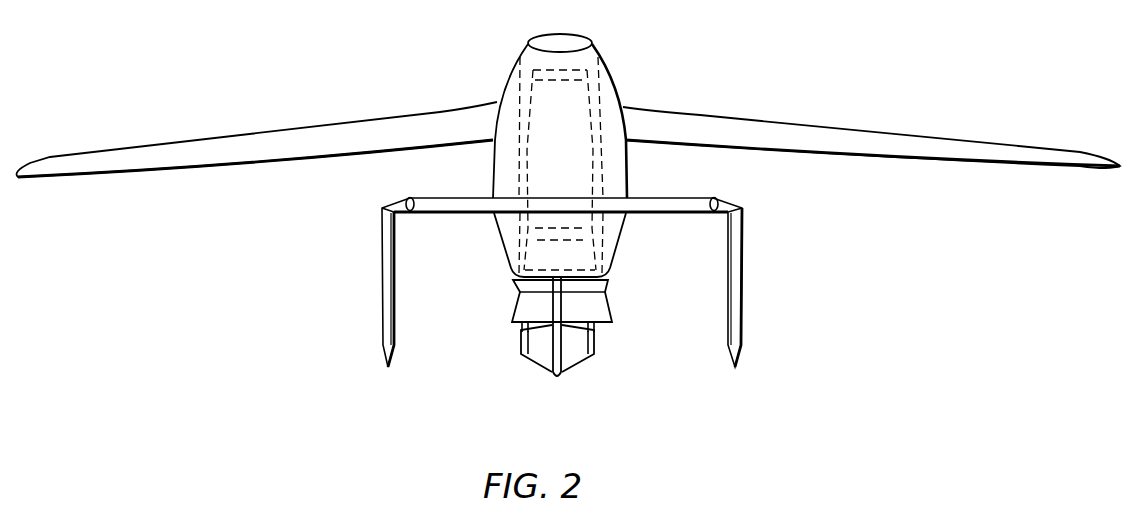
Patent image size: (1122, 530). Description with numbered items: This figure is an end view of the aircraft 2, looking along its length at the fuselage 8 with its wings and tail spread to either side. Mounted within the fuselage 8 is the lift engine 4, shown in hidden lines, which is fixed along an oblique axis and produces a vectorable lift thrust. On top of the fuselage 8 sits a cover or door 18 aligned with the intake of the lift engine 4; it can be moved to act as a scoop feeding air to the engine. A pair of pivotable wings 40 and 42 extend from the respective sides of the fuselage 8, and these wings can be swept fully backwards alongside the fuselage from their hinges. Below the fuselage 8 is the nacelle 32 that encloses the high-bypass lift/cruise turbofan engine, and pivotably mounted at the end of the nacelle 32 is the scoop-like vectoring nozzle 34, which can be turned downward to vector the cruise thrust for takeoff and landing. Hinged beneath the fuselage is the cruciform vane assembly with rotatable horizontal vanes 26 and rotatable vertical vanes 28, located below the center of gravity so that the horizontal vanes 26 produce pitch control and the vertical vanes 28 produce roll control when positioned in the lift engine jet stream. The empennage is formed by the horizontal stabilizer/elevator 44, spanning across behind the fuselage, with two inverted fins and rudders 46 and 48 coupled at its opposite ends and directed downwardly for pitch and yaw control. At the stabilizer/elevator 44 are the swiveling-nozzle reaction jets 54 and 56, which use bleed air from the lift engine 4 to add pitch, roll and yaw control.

The aircraft 2 is at (443, 56).
The lift engine 4 is at (597, 98).
The fuselage 8 is at (608, 62).
The cover or door 18 is at (585, 37).
The horizontal vanes 26 is at (582, 364).
The vertical vanes 28 is at (565, 378).
The nacelle 32 is at (597, 337).
The vectoring nozzle 34 is at (612, 304).
The pivotable wing 40 is at (233, 165).
The pivotable wing 42 is at (972, 160).
The stabilizer/elevator 44 is at (696, 198).
The inverted fin and rudder 46 is at (382, 305).
The inverted fin and rudder 48 is at (741, 296).
The reaction jet 54 is at (406, 199).
The reaction jet 56 is at (712, 212).